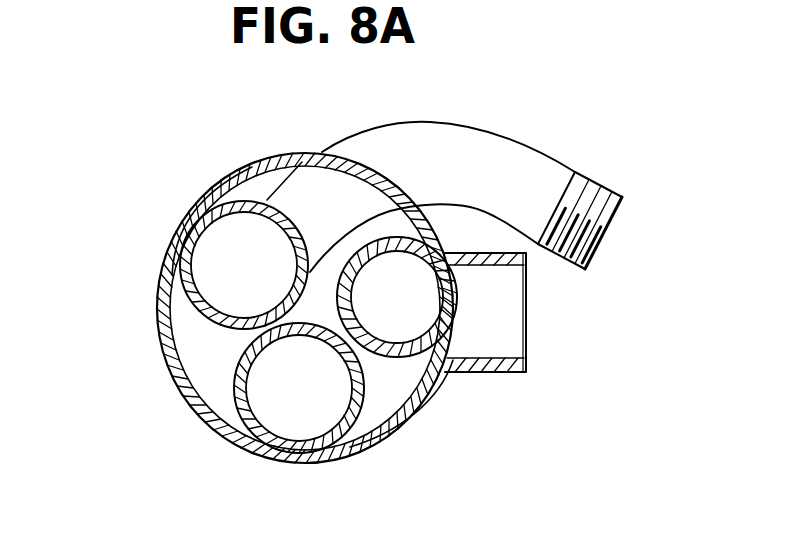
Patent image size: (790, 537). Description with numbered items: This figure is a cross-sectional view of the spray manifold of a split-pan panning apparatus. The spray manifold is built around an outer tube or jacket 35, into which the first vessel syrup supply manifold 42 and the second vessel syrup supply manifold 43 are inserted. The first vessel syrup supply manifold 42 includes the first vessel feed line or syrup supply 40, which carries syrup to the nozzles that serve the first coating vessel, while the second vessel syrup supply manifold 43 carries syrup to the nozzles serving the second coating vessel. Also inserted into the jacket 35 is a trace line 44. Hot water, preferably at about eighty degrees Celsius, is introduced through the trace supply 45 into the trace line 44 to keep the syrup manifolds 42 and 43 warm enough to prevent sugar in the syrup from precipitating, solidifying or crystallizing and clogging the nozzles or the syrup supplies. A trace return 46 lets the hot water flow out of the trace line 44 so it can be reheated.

The outer tube or jacket 35 is at (338, 463).
The first vessel feed line or syrup supply 40 is at (440, 122).
The first vessel syrup supply manifold 42 is at (212, 205).
The second vessel syrup supply manifold 43 is at (258, 435).
The trace line 44 is at (185, 338).
The trace supply 45 is at (585, 262).
The trace return 46 is at (398, 350).